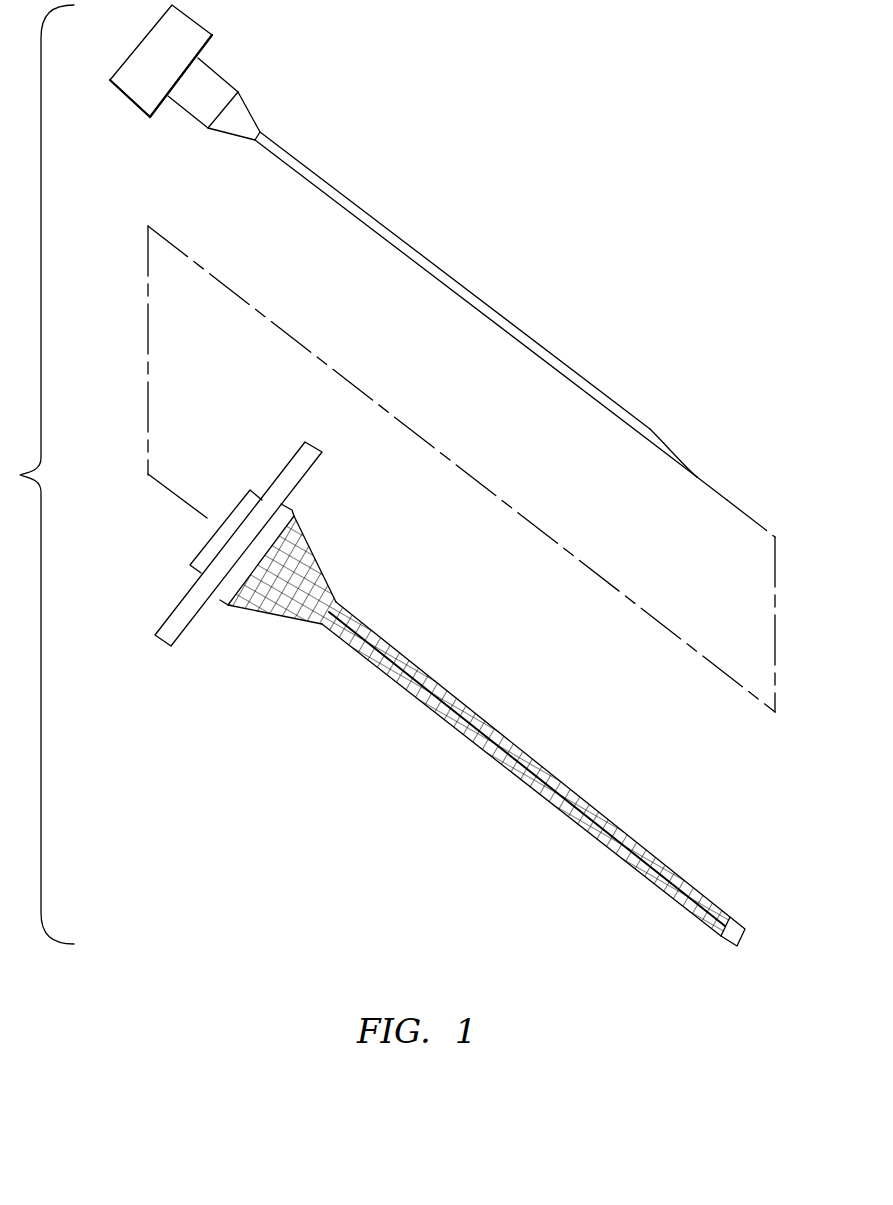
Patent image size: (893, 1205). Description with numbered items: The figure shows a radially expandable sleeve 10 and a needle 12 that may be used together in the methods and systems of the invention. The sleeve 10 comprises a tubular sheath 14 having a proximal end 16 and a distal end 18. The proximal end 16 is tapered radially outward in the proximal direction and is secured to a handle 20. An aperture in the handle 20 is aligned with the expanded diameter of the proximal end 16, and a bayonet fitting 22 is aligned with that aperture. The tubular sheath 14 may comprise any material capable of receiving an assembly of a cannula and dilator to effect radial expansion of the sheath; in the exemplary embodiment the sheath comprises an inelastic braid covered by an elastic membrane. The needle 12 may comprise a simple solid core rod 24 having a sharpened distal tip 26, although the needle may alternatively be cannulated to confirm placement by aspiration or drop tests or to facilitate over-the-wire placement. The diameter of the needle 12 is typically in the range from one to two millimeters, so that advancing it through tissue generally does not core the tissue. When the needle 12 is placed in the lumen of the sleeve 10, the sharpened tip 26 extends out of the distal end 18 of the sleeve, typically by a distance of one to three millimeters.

The radially expandable sleeve 10 is at (446, 602).
The needle 12 is at (409, 241).
The tubular sheath 14 is at (503, 737).
The proximal end 16 is at (271, 631).
The distal end 18 is at (736, 897).
The handle 20 is at (165, 613).
The bayonet fitting 22 is at (204, 547).
The solid core rod 24 is at (519, 330).
The sharpened distal tip 26 is at (697, 474).